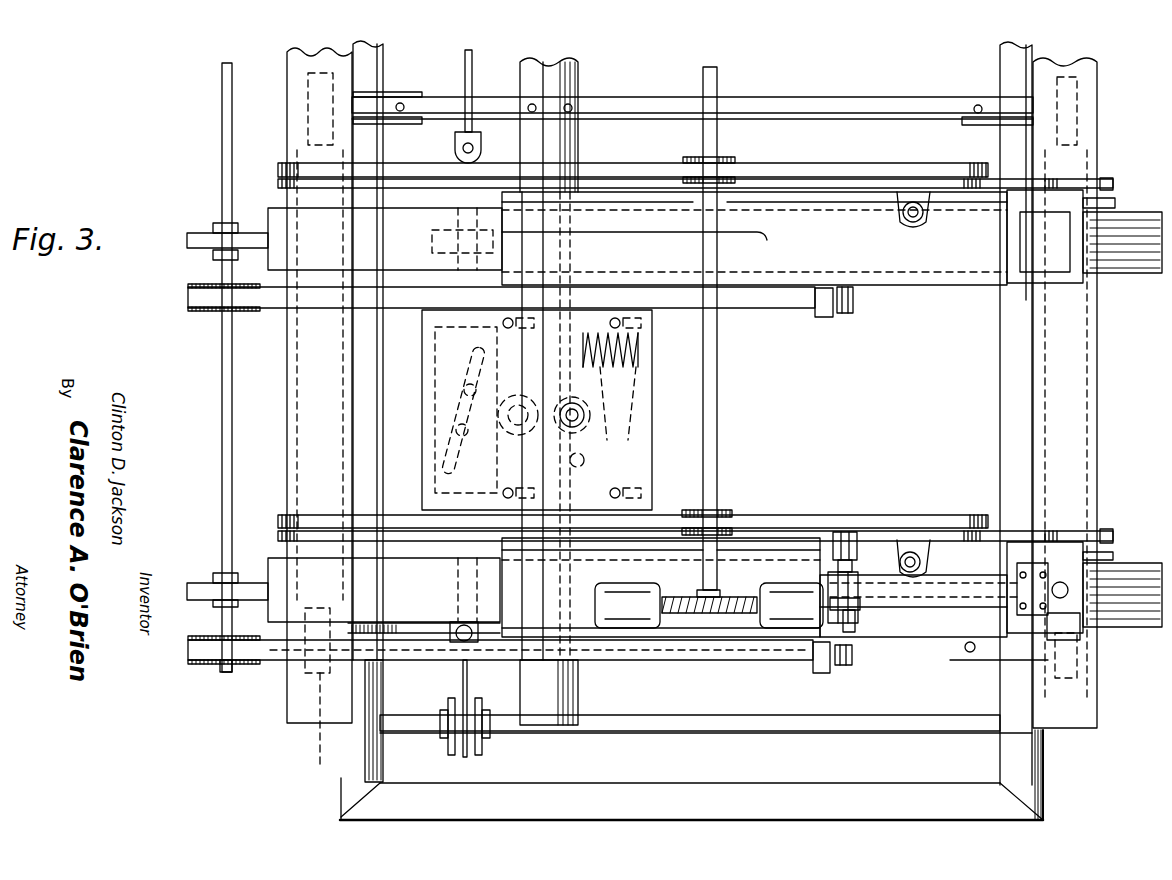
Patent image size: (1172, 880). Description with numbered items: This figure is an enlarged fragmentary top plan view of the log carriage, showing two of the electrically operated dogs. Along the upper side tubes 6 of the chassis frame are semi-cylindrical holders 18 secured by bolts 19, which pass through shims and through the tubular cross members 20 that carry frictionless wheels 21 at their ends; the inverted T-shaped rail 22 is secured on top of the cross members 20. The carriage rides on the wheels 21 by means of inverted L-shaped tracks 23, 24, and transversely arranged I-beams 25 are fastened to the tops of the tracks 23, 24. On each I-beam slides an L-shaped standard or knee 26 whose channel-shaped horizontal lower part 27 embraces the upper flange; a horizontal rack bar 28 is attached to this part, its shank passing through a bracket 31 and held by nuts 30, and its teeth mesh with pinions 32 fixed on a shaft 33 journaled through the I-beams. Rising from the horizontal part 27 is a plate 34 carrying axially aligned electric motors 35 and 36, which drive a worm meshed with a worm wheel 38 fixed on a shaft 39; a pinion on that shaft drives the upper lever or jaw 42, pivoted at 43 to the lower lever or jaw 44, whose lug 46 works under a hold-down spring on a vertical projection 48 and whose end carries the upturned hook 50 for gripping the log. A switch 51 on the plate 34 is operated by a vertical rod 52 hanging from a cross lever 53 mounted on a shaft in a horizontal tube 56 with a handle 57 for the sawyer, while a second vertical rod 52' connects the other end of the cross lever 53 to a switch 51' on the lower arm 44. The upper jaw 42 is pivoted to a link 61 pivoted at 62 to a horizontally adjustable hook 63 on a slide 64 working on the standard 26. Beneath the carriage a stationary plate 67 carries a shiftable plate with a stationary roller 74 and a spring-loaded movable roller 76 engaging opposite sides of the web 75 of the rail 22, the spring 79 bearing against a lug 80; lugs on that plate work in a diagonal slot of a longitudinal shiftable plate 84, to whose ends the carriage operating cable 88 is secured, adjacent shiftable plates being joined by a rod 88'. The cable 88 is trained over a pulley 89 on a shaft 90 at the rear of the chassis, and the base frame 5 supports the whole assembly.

The base frame 5 is at (1054, 800).
The upper side tubes 6 is at (383, 60).
The semi-cylindrical holders 18 is at (402, 122).
The bolts 19 is at (404, 104).
The tubular cross members 20 is at (808, 98).
The frictionless wheels 21 is at (308, 127).
The inverted T-shaped rail 22 is at (578, 688).
The inverted L-shaped track 23 is at (312, 715).
The inverted L-shaped track 24 is at (1080, 720).
The I-beams 25 is at (1128, 274).
The L-shaped standard or knee 26 is at (1035, 270).
The channel-shaped horizontal lower part 27 is at (915, 272).
The horizontal rack bar 28 is at (200, 298).
The nuts 30 is at (848, 313).
The bracket 31 is at (823, 318).
The pinions 32 is at (237, 664).
The shaft 33 is at (228, 672).
The plate 34 is at (775, 555).
The electric motor 35 is at (632, 630).
The electric motor 36 is at (790, 630).
The worm wheel 38 is at (732, 160).
The shaft 39 is at (718, 390).
The upper lever or jaw 42 is at (868, 165).
The pivot 43 is at (285, 515).
The lower lever or jaw 44 is at (650, 190).
The lug 46 is at (930, 212).
The vertical projection 48 is at (912, 221).
The upturned point or hook 50 is at (972, 162).
The switch 51 is at (869, 597).
The switch 51' is at (866, 570).
The vertical rod 52 is at (855, 639).
The vertical rod 52' is at (850, 520).
The cross lever 53 is at (863, 625).
The horizontal tube 56 is at (920, 600).
The handle 57 is at (1065, 640).
The link 61 is at (1018, 180).
The pivot 62 is at (1050, 565).
The horizontally adjustable hook 63 is at (1118, 202).
The slide 64 is at (1080, 283).
The plate 67 is at (652, 418).
The stationary roller 74 is at (505, 425).
The web 75 is at (542, 700).
The movable roller 76 is at (590, 432).
The spring 79 is at (620, 375).
The lug 80 is at (625, 420).
The longitudinal shiftable plate 84 is at (432, 412).
The carriage operating cable 88 is at (480, 689).
The rod 88' is at (482, 106).
The pulley 89 is at (472, 757).
The shaft 90 is at (725, 733).